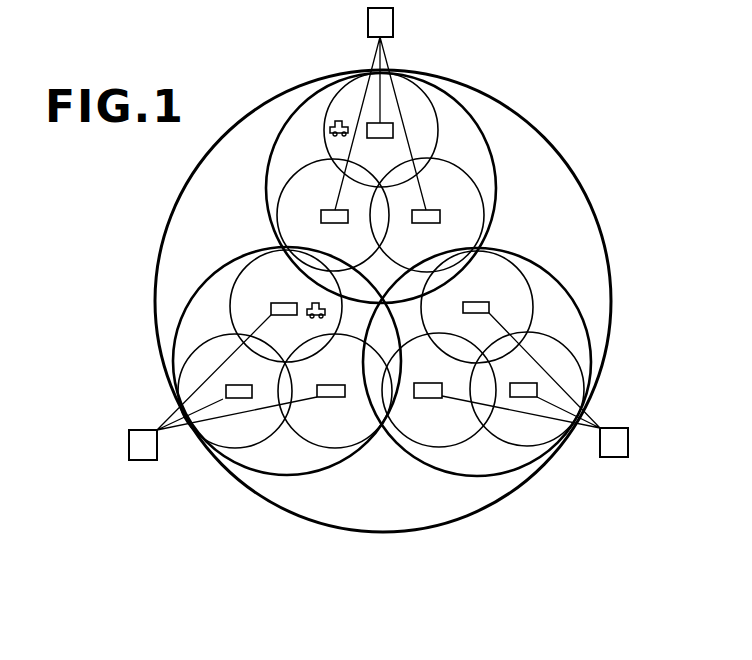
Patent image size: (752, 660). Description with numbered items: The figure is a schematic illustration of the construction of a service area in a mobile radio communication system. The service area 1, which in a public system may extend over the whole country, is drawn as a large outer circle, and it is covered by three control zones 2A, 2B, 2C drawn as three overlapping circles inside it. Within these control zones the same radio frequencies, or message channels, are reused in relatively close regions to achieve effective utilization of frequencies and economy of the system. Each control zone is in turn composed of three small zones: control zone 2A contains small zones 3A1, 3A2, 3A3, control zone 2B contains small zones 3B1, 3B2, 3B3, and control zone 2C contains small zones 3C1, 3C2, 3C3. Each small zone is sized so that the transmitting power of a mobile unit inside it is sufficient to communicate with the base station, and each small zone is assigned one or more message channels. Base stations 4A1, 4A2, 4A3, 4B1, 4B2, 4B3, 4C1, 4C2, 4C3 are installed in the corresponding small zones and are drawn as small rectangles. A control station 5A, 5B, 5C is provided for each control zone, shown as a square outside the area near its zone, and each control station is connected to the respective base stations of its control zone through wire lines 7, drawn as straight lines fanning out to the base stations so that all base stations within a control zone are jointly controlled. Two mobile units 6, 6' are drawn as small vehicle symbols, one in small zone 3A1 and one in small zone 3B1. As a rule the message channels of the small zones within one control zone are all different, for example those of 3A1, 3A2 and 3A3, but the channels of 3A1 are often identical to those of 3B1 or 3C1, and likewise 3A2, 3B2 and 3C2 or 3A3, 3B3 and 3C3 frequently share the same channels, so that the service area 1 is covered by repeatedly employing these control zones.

The service area 1 is at (604, 247).
The control zone 2A is at (494, 196).
The control zone 2B is at (320, 473).
The control zone 2C is at (445, 476).
The small zone 3A1 is at (336, 102).
The small zone 3A2 is at (284, 218).
The small zone 3A3 is at (480, 214).
The small zone 3B1 is at (235, 283).
The small zone 3B2 is at (190, 373).
The small zone 3B3 is at (357, 430).
The small zone 3C1 is at (521, 292).
The small zone 3C2 is at (452, 427).
The small zone 3C3 is at (568, 367).
The base station 4A1 is at (421, 111).
The base station 4A2 is at (322, 210).
The base station 4A3 is at (427, 210).
The base station 4B1 is at (278, 302).
The base station 4B2 is at (228, 384).
The base station 4B3 is at (318, 384).
The base station 4C1 is at (464, 302).
The base station 4C2 is at (441, 382).
The base station 4C3 is at (535, 382).
The control station 5A is at (395, 18).
The control station 5B is at (135, 462).
The control station 5C is at (610, 459).
The mobile unit 6 is at (342, 114).
The mobile unit 6' is at (312, 298).
The wire lines 7 is at (408, 141).